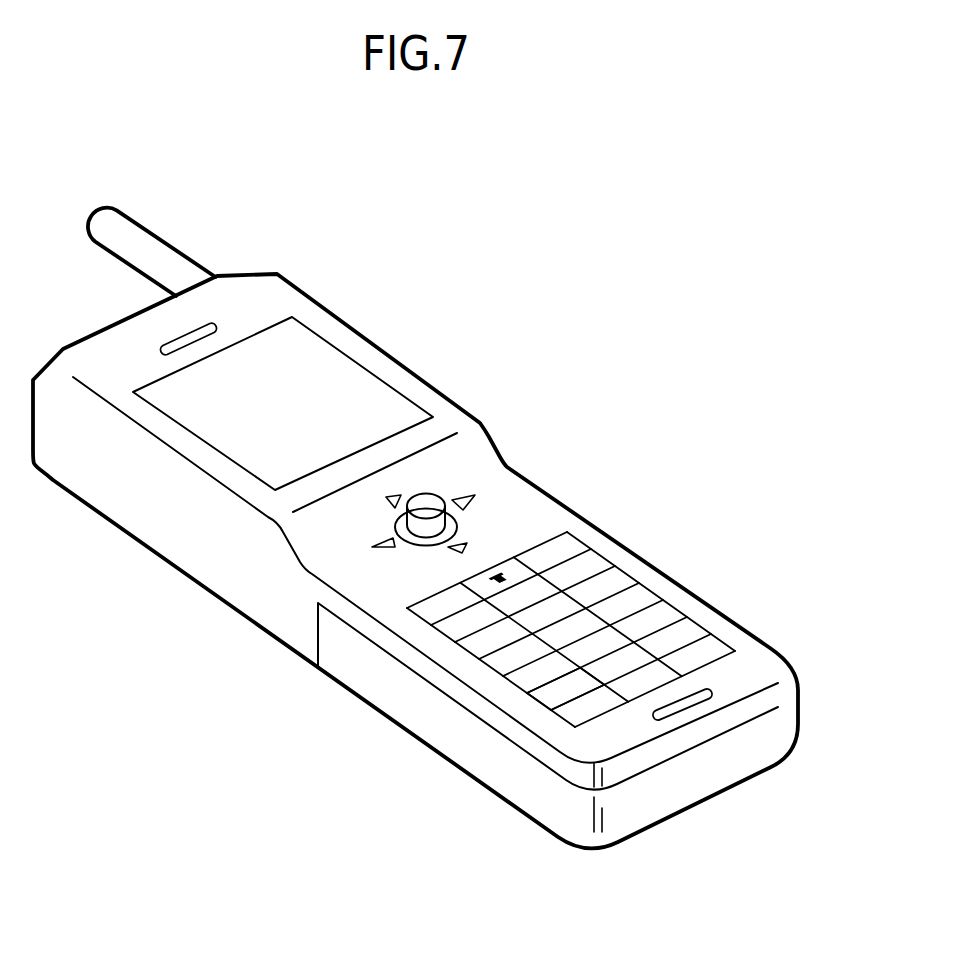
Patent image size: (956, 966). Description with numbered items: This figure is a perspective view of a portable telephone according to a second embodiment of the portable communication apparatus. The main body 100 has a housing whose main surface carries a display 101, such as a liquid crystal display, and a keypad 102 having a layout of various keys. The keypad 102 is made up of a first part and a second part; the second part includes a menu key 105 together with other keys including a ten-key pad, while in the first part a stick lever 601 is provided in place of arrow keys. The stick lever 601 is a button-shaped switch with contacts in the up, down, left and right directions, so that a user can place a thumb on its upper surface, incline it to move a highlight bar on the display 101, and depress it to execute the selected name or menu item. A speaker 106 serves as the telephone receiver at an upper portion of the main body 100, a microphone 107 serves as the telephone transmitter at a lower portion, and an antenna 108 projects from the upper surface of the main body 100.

The main body 100 is at (240, 671).
The display 101 is at (333, 372).
The keypad 102 is at (798, 613).
The menu key 105 is at (553, 693).
The speaker 106 is at (214, 326).
The microphone 107 is at (710, 693).
The antenna 108 is at (160, 228).
The stick lever 601 is at (432, 508).